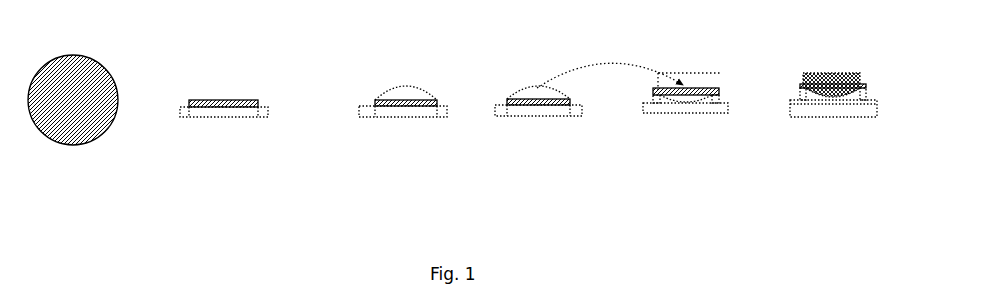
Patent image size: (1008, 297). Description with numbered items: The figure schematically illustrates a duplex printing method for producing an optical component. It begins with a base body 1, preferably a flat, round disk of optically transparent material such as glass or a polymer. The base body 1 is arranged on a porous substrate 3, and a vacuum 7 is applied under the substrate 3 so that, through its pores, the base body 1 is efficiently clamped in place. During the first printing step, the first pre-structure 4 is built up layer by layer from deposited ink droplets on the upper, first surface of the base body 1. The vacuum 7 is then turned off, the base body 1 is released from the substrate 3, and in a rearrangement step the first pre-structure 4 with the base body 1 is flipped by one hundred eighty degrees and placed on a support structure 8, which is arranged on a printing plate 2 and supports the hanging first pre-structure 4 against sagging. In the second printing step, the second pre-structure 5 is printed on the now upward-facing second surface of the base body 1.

The base body 1 is at (83, 69).
The printing plate 2 is at (707, 107).
The porous substrate 3 is at (230, 120).
The first pre-structure 4 is at (400, 94).
The second pre-structure 5 is at (843, 80).
The vacuum 7 is at (206, 118).
The support structure 8 is at (655, 98).